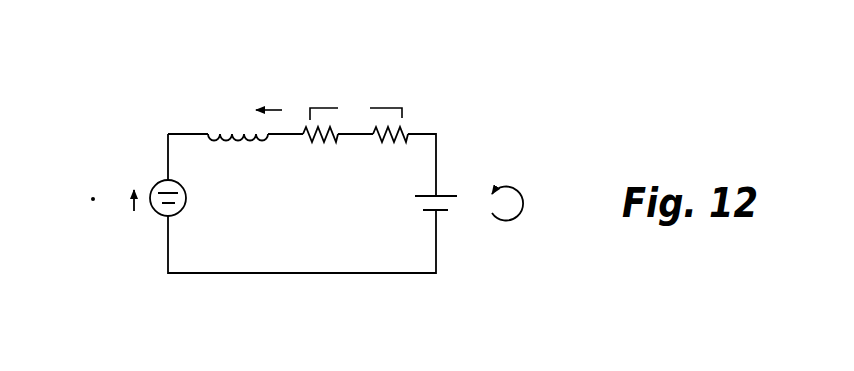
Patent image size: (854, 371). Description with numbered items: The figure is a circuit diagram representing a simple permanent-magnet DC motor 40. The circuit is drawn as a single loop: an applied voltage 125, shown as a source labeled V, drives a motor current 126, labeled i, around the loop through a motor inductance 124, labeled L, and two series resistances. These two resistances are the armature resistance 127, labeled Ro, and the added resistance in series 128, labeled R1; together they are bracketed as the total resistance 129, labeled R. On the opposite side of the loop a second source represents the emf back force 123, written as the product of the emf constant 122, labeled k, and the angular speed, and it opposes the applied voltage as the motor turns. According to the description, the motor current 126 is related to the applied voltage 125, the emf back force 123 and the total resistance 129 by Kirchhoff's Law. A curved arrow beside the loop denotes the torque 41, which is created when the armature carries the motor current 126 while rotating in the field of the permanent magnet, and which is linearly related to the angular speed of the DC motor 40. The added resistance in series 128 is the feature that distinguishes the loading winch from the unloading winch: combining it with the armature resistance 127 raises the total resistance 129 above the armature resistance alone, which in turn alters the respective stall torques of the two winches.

The DC motor 40 is at (446, 106).
The torque 41 is at (516, 168).
The emf constant 122 is at (82, 213).
The emf back force 123 is at (93, 190).
The motor inductance 124 is at (248, 185).
The applied voltage 125 is at (468, 215).
The motor current 126 is at (295, 92).
The armature resistance 127 is at (315, 185).
The added resistance in series 128 is at (377, 183).
The total resistance 129 is at (357, 92).